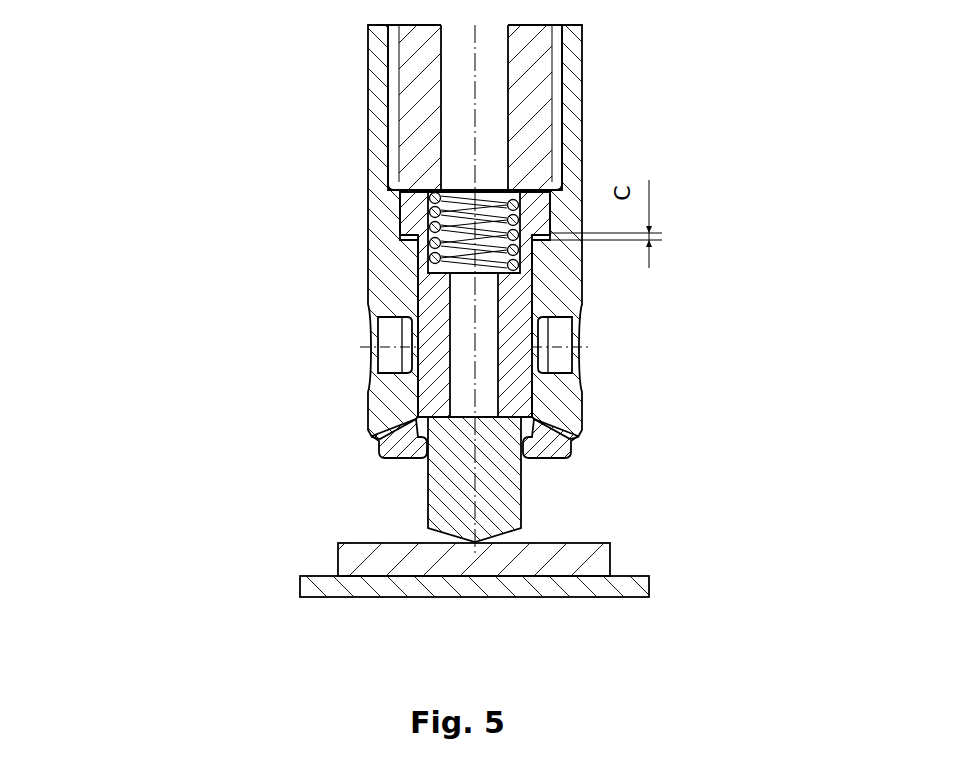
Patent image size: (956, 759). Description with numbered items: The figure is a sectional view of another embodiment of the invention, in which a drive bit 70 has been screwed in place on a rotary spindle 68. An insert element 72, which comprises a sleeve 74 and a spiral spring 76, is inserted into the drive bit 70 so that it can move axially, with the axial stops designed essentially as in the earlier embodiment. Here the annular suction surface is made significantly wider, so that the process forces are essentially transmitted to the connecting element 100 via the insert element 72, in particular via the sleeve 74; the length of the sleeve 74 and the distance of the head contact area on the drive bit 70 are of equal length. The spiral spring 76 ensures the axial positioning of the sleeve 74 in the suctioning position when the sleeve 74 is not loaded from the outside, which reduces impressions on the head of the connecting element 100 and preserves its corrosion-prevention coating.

The rotary spindle 68 is at (520, 87).
The drive bit 70 is at (388, 263).
The insert element 72 is at (392, 298).
The sleeve 74 is at (512, 373).
The spiral spring 76 is at (520, 188).
The connecting element 100 is at (442, 490).